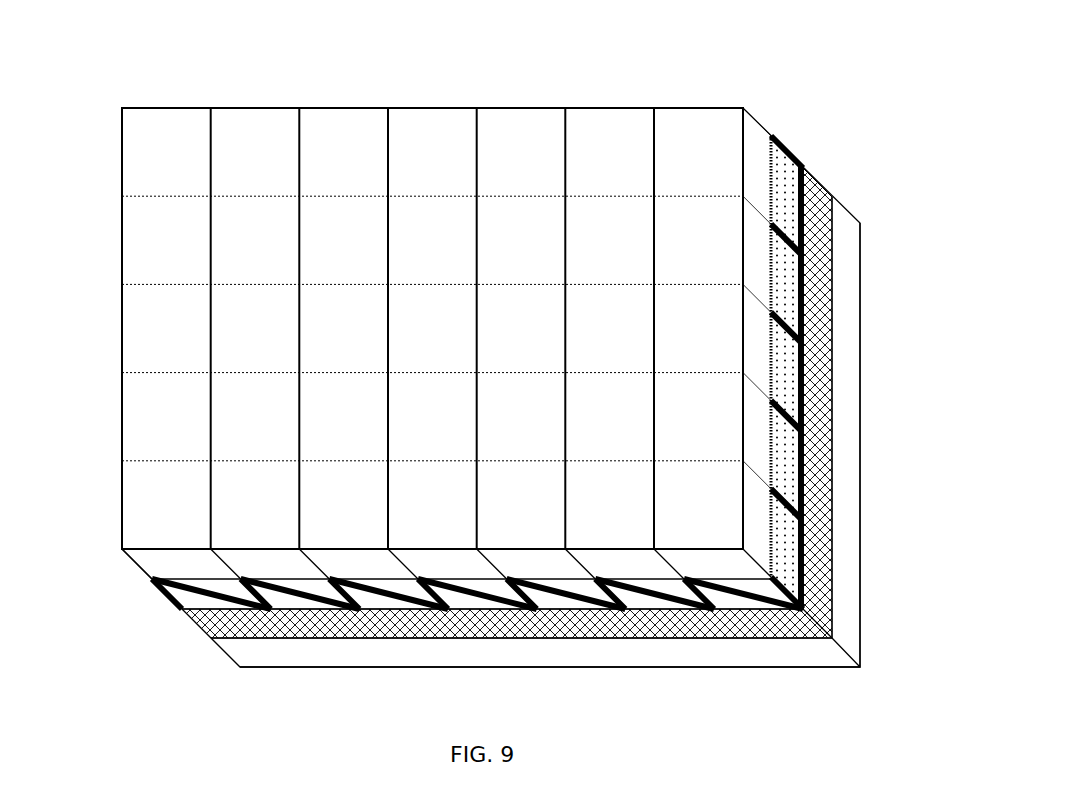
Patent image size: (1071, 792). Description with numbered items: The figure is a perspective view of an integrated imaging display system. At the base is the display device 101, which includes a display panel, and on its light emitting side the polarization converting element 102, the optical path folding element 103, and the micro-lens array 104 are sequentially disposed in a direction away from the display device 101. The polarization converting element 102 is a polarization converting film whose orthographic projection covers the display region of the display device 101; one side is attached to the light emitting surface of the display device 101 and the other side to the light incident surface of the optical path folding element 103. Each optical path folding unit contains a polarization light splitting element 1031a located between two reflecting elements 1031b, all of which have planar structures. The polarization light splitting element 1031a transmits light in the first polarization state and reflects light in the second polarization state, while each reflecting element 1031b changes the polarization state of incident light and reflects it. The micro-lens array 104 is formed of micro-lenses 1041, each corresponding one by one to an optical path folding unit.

The display device 101 is at (218, 657).
The polarization converting element 102 is at (190, 628).
The optical path folding element 103 is at (158, 598).
The micro-lens array 104 is at (128, 567).
The micro-lens 1041 is at (612, 143).
The polarization light splitting element 1031a is at (738, 597).
The reflecting element 1031b is at (785, 193).